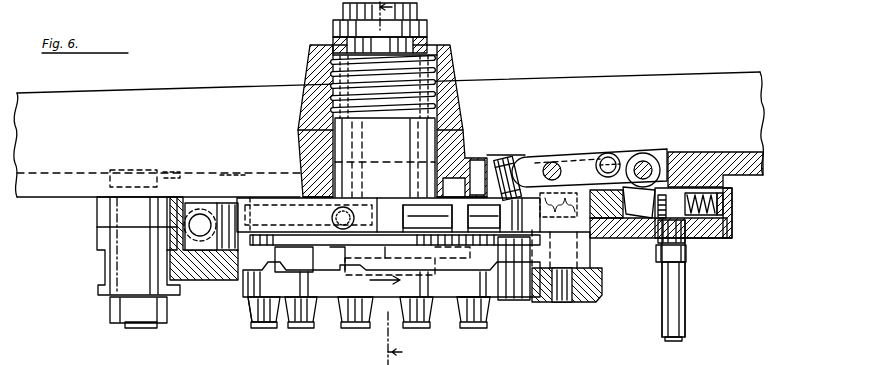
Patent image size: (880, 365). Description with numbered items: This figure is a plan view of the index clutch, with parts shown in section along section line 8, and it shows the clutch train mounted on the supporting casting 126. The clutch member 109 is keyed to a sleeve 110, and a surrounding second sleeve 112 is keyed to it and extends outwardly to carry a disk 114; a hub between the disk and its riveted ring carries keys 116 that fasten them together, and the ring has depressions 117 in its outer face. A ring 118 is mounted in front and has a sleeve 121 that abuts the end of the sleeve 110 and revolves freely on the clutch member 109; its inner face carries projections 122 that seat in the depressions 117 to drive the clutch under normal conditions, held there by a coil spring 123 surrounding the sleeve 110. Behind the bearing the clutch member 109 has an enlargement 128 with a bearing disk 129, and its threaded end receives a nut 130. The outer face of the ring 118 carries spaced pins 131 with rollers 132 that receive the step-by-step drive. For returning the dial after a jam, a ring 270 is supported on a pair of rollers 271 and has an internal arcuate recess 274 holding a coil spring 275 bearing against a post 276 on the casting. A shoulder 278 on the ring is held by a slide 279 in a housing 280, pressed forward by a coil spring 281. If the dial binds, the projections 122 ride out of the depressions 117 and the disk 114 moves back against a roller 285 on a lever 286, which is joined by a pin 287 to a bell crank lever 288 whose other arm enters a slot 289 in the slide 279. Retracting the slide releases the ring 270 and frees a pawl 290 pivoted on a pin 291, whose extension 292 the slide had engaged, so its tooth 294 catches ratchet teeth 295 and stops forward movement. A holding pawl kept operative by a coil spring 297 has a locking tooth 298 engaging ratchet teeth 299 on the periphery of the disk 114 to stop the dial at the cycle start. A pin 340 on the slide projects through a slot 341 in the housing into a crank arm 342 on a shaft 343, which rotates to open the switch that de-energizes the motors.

The section line 8— 8 is at (408, 183).
The clutch member 109 is at (340, 10).
The sleeve 110 is at (452, 69).
The second sleeve 112 is at (462, 120).
The disk 114 is at (478, 192).
The keys 116 is at (390, 266).
The depressions 117 is at (320, 270).
The ring 118 is at (330, 300).
The sleeve 121 is at (364, 143).
The projections 122 is at (312, 277).
The coil spring 123 is at (333, 74).
The supporting casting 126 is at (58, 200).
The enlargement 128 is at (332, 29).
The bearing disk 129 is at (428, 36).
The nut 130 is at (452, 249).
The pins 131 is at (263, 325).
The rollers 132 is at (250, 320).
The ring 270 is at (213, 280).
The rollers 271 is at (105, 265).
The internal arcuate recess 274 is at (180, 178).
The coil spring 275 is at (224, 200).
The post 276 is at (200, 208).
The shoulder 278 is at (606, 230).
The slide 279 is at (658, 251).
The housing 280 is at (733, 223).
The coil spring 281 is at (725, 206).
The roller 285 is at (509, 158).
The lever 286 is at (530, 165).
The pin 287 is at (608, 153).
The bell crank lever 288 is at (645, 154).
The slot 289 is at (635, 216).
The pawl 290 is at (512, 300).
The pin 291 is at (565, 302).
The extension 292 is at (598, 172).
The tooth 294 is at (495, 300).
The ratchet teeth 295 is at (388, 215).
The coil spring 297 is at (347, 210).
The locking tooth 298 is at (427, 216).
The ratchet teeth 299 is at (493, 215).
The pin 340 is at (672, 268).
The slot 341 is at (686, 238).
The crank arm 342 is at (687, 258).
The shaft 343 is at (686, 312).